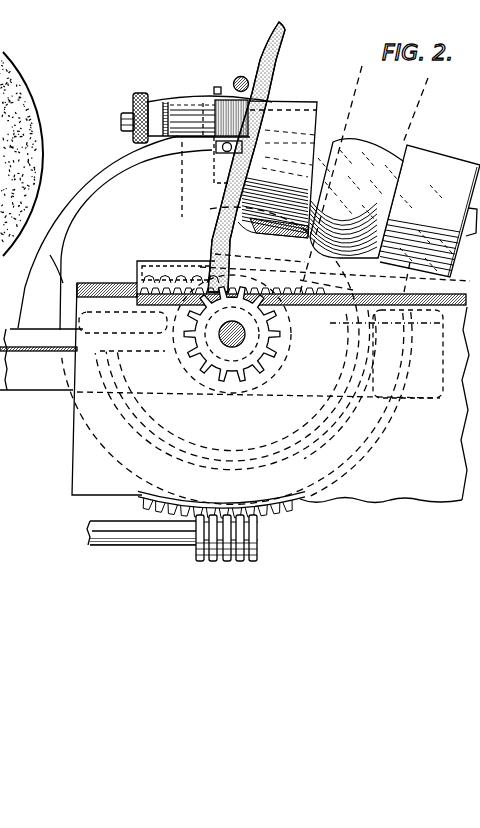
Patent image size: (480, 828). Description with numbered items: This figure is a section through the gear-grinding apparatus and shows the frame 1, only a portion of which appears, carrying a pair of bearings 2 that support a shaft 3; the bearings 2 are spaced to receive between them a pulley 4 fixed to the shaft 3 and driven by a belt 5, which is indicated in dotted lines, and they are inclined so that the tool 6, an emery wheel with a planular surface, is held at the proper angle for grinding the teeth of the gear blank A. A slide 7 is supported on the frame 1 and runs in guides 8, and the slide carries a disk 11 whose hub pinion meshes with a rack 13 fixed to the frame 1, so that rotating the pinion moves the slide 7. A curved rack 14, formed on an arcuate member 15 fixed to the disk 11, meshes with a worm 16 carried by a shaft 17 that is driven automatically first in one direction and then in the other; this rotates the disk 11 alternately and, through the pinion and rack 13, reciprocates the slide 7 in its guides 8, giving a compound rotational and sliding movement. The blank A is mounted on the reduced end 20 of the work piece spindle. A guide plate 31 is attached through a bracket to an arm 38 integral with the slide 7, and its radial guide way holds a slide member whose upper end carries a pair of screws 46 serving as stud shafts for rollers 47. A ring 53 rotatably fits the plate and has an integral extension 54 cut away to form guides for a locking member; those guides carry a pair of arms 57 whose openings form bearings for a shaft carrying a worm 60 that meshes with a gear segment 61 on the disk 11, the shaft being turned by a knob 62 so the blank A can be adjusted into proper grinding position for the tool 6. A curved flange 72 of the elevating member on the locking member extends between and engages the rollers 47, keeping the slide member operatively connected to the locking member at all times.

The frame 1 is at (326, 285).
The bearings 2 is at (323, 131).
The shaft 3 is at (477, 236).
The pulley 4 is at (392, 178).
The belt 5 is at (362, 68).
The tool 6 is at (12, 80).
The slide 7 is at (80, 455).
The guides 8 is at (88, 289).
The disk 11 is at (72, 268).
The rack 13 is at (148, 248).
The curved rack 14 is at (268, 506).
The arcuate member 15 is at (232, 499).
The worm 16 is at (203, 561).
The shaft 17 is at (152, 546).
The reduced end 20 is at (246, 336).
The guide plate 31 is at (33, 263).
The arm 38 is at (17, 378).
The screws 46 is at (228, 77).
The rollers 47 is at (244, 77).
The ring 53 is at (150, 440).
The extension 54 is at (180, 201).
The arms 57 is at (193, 104).
The worm 60 is at (206, 160).
The gear segment 61 is at (229, 153).
The knob 62 is at (142, 92).
The flange 72 is at (128, 131).
The gear blank A is at (220, 385).